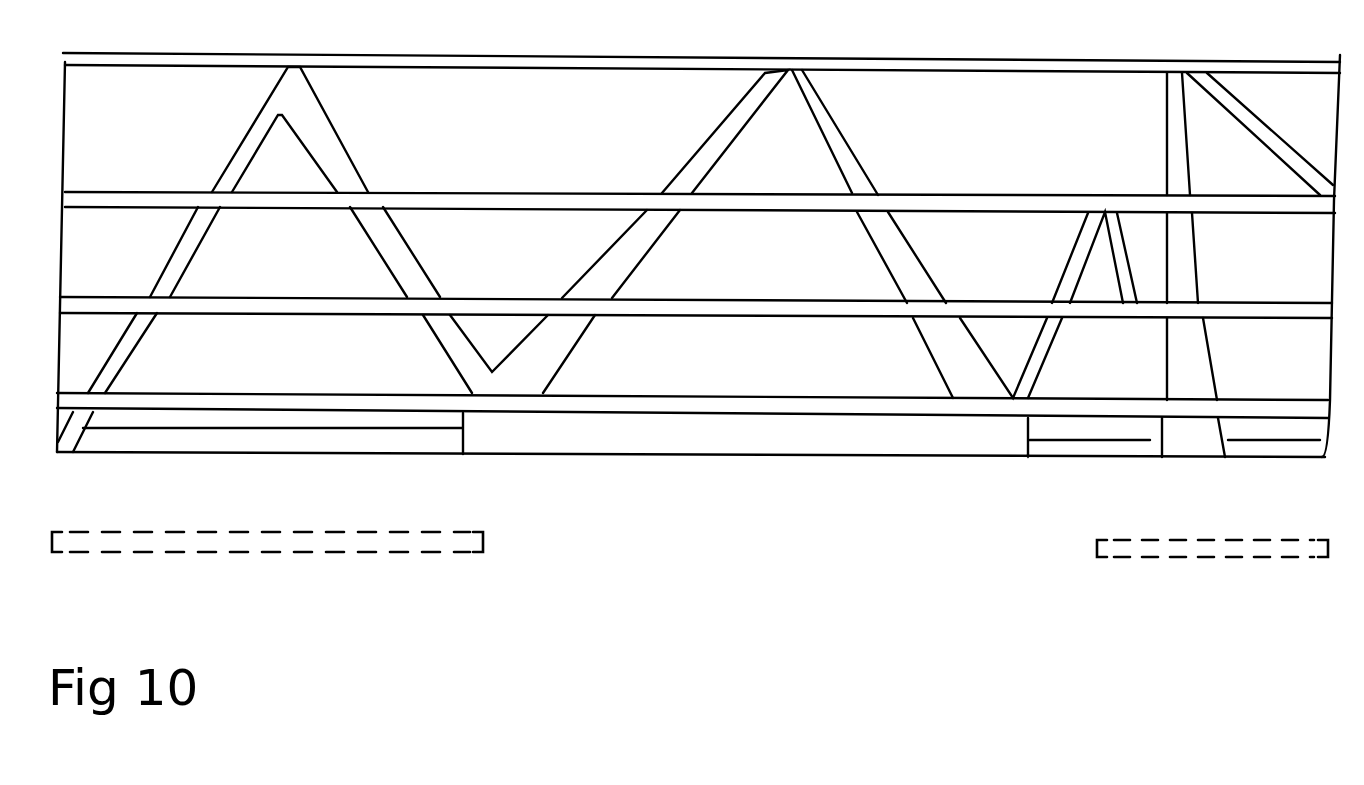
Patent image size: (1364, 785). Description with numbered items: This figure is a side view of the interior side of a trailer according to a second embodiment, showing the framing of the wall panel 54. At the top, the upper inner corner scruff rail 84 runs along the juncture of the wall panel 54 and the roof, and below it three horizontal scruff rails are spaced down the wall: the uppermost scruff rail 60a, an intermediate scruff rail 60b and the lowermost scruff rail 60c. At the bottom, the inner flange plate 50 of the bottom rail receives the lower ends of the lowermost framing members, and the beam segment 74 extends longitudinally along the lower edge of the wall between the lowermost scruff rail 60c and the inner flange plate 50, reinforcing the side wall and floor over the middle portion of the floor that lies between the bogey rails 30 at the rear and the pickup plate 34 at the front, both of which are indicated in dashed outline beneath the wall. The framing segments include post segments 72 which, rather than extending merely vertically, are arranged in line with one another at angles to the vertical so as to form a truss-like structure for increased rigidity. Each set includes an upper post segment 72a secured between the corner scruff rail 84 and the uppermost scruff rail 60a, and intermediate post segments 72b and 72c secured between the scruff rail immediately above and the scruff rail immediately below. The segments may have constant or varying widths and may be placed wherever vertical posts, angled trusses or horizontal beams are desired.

The upper inner corner scruff rail 84 is at (155, 58).
The wall panel 54 is at (538, 128).
The uppermost scruff rail 60a is at (143, 196).
The scruff rail 60b is at (108, 301).
The lowermost scruff rail 60c is at (260, 397).
The post segments 72 is at (1066, 272).
The upper post segment 72a is at (333, 149).
The intermediate post segment 72b is at (203, 252).
The intermediate post segment 72c is at (128, 353).
The inner flange plate 50 is at (158, 440).
The beam segment 74 is at (682, 445).
The bogey rails 30 is at (487, 546).
The pickup plate 34 is at (1091, 552).